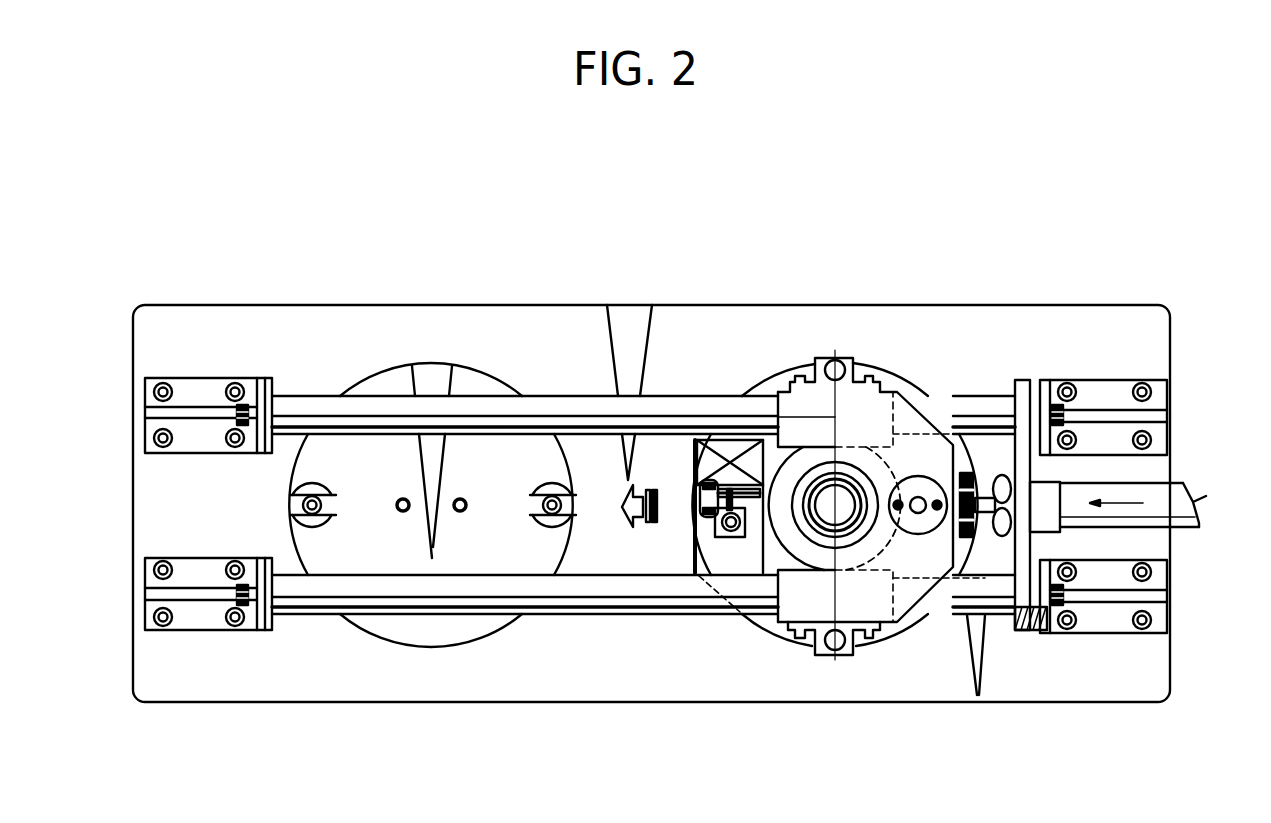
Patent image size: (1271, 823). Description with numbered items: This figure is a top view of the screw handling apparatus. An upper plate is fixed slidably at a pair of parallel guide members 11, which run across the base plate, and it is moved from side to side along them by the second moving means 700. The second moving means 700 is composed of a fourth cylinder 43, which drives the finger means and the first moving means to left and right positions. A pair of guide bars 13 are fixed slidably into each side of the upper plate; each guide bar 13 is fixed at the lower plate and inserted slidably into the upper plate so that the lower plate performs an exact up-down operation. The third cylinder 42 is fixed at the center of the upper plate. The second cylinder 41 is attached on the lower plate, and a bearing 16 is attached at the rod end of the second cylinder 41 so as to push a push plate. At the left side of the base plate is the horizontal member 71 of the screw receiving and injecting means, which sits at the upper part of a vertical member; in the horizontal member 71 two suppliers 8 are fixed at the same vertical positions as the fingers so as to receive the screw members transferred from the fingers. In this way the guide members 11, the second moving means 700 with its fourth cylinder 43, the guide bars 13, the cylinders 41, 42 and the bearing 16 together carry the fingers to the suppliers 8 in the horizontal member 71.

The suppliers 8 is at (326, 503).
The horizontal member 71 is at (425, 647).
The parallel guide members 11 is at (532, 598).
The bearing 16 is at (697, 560).
The second cylinder 41 is at (763, 486).
The third cylinder 42 is at (746, 532).
The guide bar 13 is at (918, 513).
The second moving means 700 is at (1160, 478).
The fourth cylinder 43 is at (1186, 528).